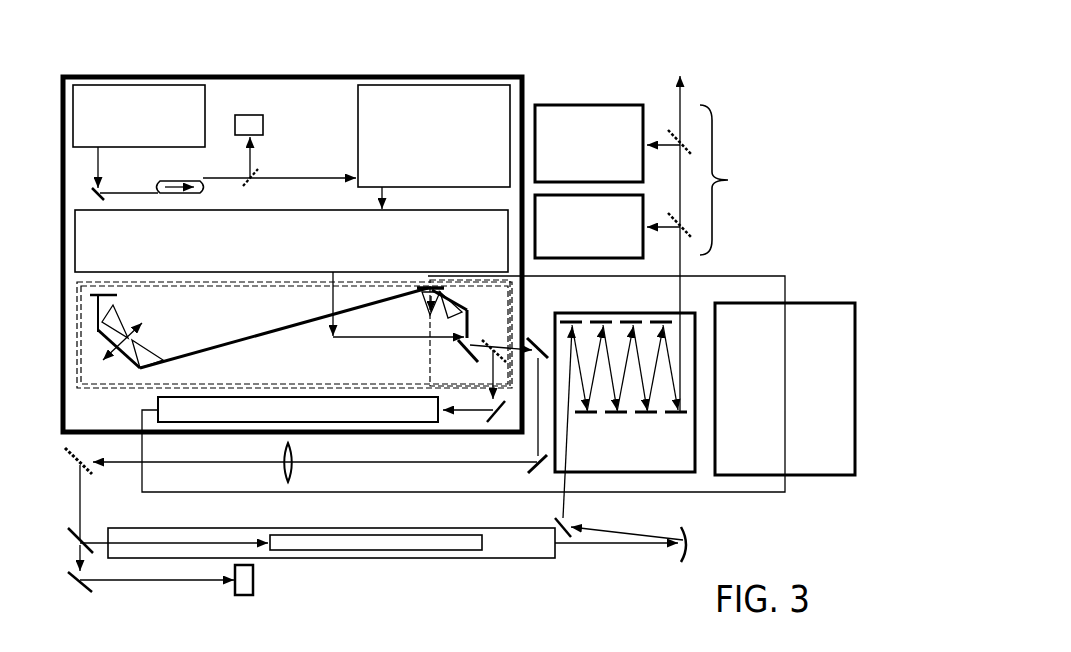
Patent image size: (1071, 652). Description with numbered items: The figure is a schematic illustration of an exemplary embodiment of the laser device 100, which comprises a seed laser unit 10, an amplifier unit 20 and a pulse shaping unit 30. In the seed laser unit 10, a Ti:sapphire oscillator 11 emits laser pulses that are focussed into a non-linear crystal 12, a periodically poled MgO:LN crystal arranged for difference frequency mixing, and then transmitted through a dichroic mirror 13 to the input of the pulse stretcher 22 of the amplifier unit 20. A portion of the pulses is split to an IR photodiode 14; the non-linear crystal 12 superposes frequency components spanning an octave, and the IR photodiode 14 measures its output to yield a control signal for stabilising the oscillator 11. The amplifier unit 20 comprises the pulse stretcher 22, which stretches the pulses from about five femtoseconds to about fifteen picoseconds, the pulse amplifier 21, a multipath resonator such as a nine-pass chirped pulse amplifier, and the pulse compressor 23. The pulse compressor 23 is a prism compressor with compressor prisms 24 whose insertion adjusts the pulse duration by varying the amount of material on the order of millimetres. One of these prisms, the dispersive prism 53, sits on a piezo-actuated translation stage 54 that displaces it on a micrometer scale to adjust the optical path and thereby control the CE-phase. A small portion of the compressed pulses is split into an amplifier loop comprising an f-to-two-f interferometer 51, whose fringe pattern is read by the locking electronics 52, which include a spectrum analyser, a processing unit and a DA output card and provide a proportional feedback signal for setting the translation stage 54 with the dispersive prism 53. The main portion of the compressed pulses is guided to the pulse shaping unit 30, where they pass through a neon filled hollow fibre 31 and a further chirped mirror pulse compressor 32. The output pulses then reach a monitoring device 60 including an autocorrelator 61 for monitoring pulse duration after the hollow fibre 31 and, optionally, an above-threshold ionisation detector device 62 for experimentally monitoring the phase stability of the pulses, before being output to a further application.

The laser device 100 is at (735, 67).
The seed laser unit 10 is at (231, 176).
The Ti:sapphire oscillator 11 is at (140, 95).
The non-linear crystal 12 is at (163, 195).
The dichroic mirror 13 is at (260, 176).
The IR photodiode 14 is at (245, 118).
The amplifier unit 20 is at (485, 246).
The pulse amplifier 21 is at (330, 233).
The pulse stretcher 22 is at (410, 93).
The pulse compressor 23 is at (143, 378).
The compressor prisms 24 is at (148, 345).
The pulse shaping unit 30 is at (372, 526).
The hollow fibre 31 is at (415, 545).
The chirped mirror pulse compressor 32 is at (662, 460).
The f-to-2f interferometer 51 is at (393, 405).
The locking electronics 52 is at (790, 457).
The dispersive prism 53 is at (428, 292).
The piezo-actuated translation stage 54 is at (497, 312).
The monitoring device 60 is at (768, 200).
The autocorrelator 61 is at (613, 226).
The above-threshold ionisation detector device 62 is at (613, 143).